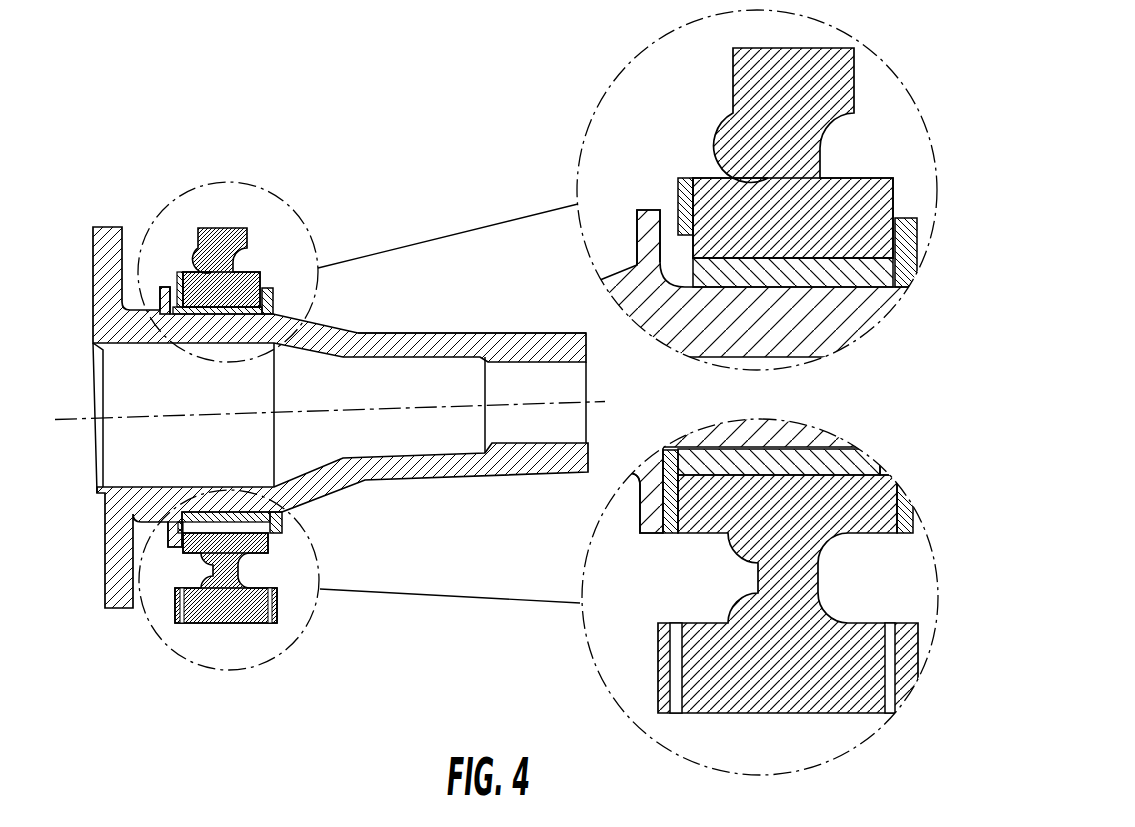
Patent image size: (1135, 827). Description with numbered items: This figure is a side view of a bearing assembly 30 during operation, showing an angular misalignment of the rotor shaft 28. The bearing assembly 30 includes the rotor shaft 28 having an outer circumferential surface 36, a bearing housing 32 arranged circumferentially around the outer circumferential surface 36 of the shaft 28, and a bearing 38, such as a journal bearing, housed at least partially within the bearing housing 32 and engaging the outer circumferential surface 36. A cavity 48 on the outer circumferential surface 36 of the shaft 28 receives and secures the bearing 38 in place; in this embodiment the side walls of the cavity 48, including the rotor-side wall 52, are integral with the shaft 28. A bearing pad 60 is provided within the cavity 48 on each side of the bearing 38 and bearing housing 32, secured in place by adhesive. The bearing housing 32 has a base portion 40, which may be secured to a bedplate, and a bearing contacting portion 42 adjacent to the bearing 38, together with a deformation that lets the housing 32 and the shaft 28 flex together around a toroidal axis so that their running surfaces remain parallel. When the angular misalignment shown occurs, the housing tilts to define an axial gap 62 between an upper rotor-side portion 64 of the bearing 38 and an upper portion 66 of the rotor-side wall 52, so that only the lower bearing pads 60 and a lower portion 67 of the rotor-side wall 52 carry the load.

The rotor shaft 28 is at (469, 329).
The bearing assembly 30 is at (53, 208).
The bearing housing 32 is at (523, 381).
The outer circumferential surface 36 is at (403, 333).
The bearing 38 is at (250, 290).
The base portion 40 is at (226, 620).
The bearing contacting portion 42 is at (258, 543).
The cavity 48 is at (165, 333).
The rotor-side wall 52 is at (650, 203).
The bearing pad 60 is at (180, 271).
The axial gap 62 is at (173, 305).
The upper rotor-side portion 64 is at (668, 178).
The upper portion 66 is at (685, 178).
The lower portion 67 is at (652, 535).